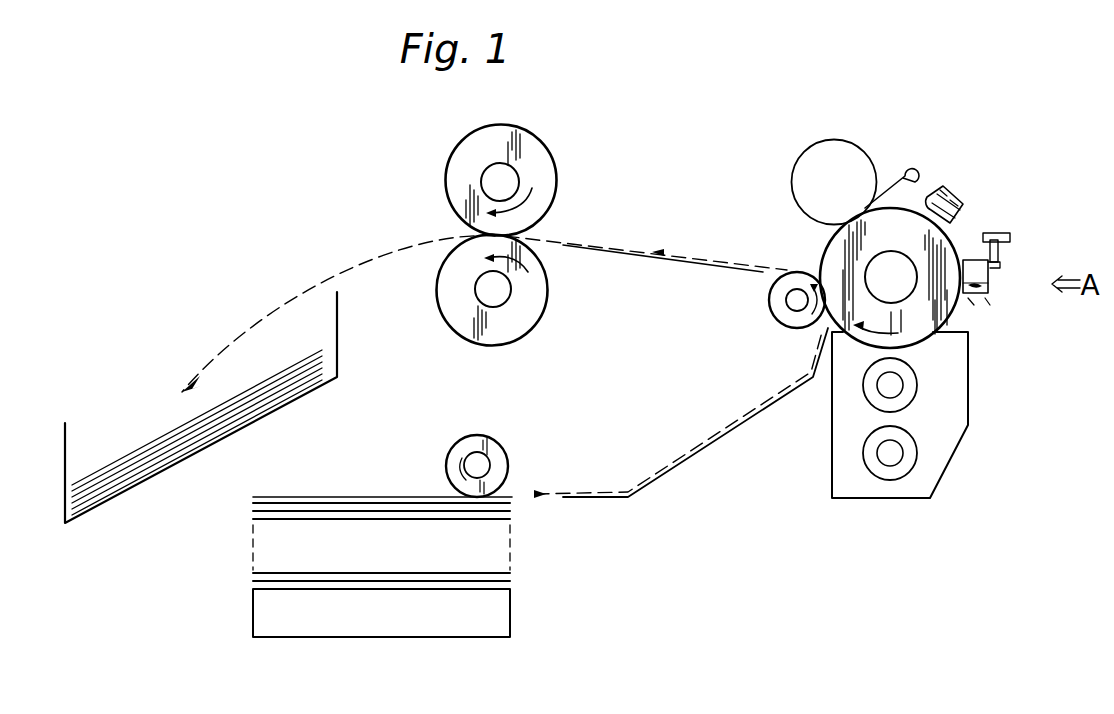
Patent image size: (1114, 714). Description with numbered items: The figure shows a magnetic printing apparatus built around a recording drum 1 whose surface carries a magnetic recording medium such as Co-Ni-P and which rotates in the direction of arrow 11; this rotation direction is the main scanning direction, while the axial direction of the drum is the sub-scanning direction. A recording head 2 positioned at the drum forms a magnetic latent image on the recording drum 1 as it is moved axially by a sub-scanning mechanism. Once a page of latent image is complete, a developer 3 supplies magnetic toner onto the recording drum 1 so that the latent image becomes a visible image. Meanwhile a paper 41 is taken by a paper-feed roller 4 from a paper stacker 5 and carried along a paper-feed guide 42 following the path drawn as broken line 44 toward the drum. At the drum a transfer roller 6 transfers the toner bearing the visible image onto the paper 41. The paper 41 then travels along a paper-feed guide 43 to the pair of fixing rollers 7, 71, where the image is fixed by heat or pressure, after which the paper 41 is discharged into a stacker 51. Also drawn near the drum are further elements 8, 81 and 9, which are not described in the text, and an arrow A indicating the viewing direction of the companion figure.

The recording drum 1 is at (950, 318).
The arrow 11 is at (882, 314).
The recording head 2 is at (990, 292).
The developer 3 is at (968, 383).
The paper-feed roller 4 is at (482, 436).
The paper 41 is at (512, 497).
The paper-feed guide 42 is at (648, 480).
The paper-feed guide 43 is at (668, 264).
The broken line 44 is at (653, 470).
The paper stacker 5 is at (512, 620).
The stacker 51 is at (337, 377).
The transfer roller 6 is at (778, 322).
The fixing roller 7 is at (548, 140).
The fixing roller 71 is at (542, 320).
The cleaning blade 8 is at (905, 172).
The cleaning roller 81 is at (840, 140).
The charger 9 is at (962, 195).